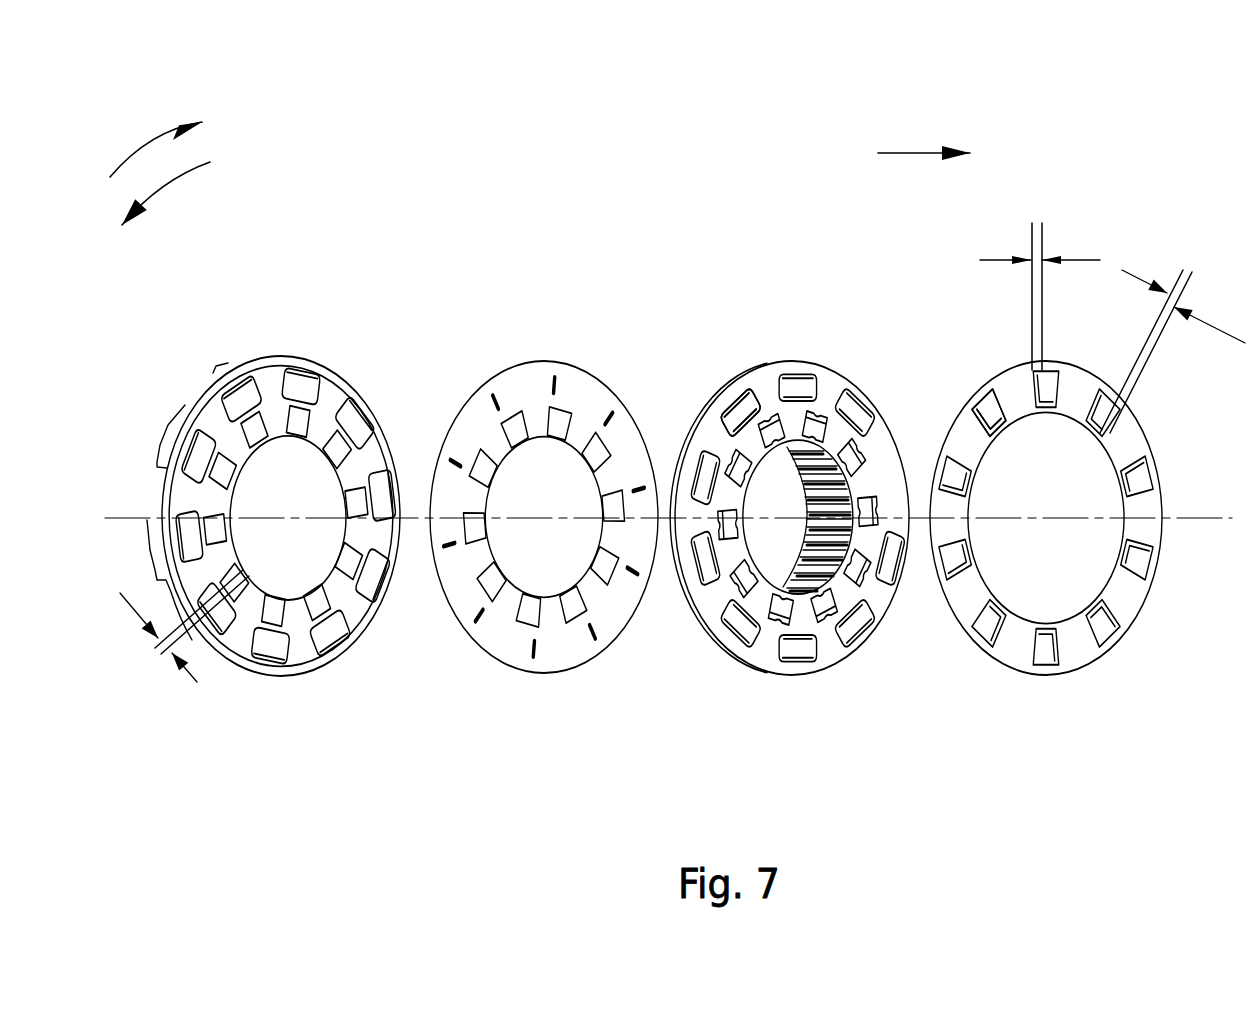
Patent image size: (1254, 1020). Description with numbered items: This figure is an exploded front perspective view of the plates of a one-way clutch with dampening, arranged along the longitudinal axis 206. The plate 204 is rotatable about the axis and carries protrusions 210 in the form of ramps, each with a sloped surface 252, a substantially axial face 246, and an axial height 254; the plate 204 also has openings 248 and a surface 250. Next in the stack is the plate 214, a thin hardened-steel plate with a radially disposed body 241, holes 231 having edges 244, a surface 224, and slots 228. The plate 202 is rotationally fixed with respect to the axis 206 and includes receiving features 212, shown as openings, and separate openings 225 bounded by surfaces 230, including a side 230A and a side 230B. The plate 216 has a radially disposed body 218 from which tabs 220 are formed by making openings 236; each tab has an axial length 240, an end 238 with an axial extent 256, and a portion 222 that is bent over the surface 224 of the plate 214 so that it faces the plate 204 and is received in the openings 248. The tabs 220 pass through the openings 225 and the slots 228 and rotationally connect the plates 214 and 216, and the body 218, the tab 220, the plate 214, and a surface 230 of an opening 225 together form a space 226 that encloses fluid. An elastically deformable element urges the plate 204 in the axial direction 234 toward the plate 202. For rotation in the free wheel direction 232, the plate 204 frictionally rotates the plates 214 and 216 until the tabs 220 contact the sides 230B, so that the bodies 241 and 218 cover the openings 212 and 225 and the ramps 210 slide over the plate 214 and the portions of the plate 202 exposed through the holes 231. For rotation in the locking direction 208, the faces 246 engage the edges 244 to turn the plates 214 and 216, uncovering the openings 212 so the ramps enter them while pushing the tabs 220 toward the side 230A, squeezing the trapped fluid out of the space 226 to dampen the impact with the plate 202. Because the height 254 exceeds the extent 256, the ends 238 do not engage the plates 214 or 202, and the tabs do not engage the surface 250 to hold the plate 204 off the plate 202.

The plate 202 is at (821, 514).
The plate 204 is at (297, 522).
The longitudinal axis 206 is at (1089, 583).
The rotational direction 208 is at (132, 157).
The protrusion 210 is at (325, 616).
The receiving feature 212 is at (782, 612).
The plate 214 is at (565, 523).
The plate 216 is at (1018, 672).
The body 218 is at (1013, 643).
The tab 220 is at (1115, 410).
The portion 222 is at (980, 428).
The surface 224 is at (473, 397).
The opening 225 is at (792, 385).
The space 226 is at (848, 662).
The opening 228 is at (607, 415).
The surface 230 is at (862, 401).
The surface 230A is at (890, 575).
The side 230B is at (742, 400).
The opening 231 is at (515, 428).
The rotational direction 232 is at (172, 182).
The axial direction 234 is at (920, 152).
The opening 236 is at (1047, 650).
The end 238 is at (1147, 462).
The axial length 240 is at (1212, 323).
The body 241 is at (563, 648).
The edge 244 is at (603, 585).
The axial face 246 is at (347, 607).
The opening 248 is at (272, 648).
The surface 250 is at (330, 393).
The sloped surface 252 is at (305, 658).
The axial height 254 is at (192, 673).
The axial extent 256 is at (1088, 260).